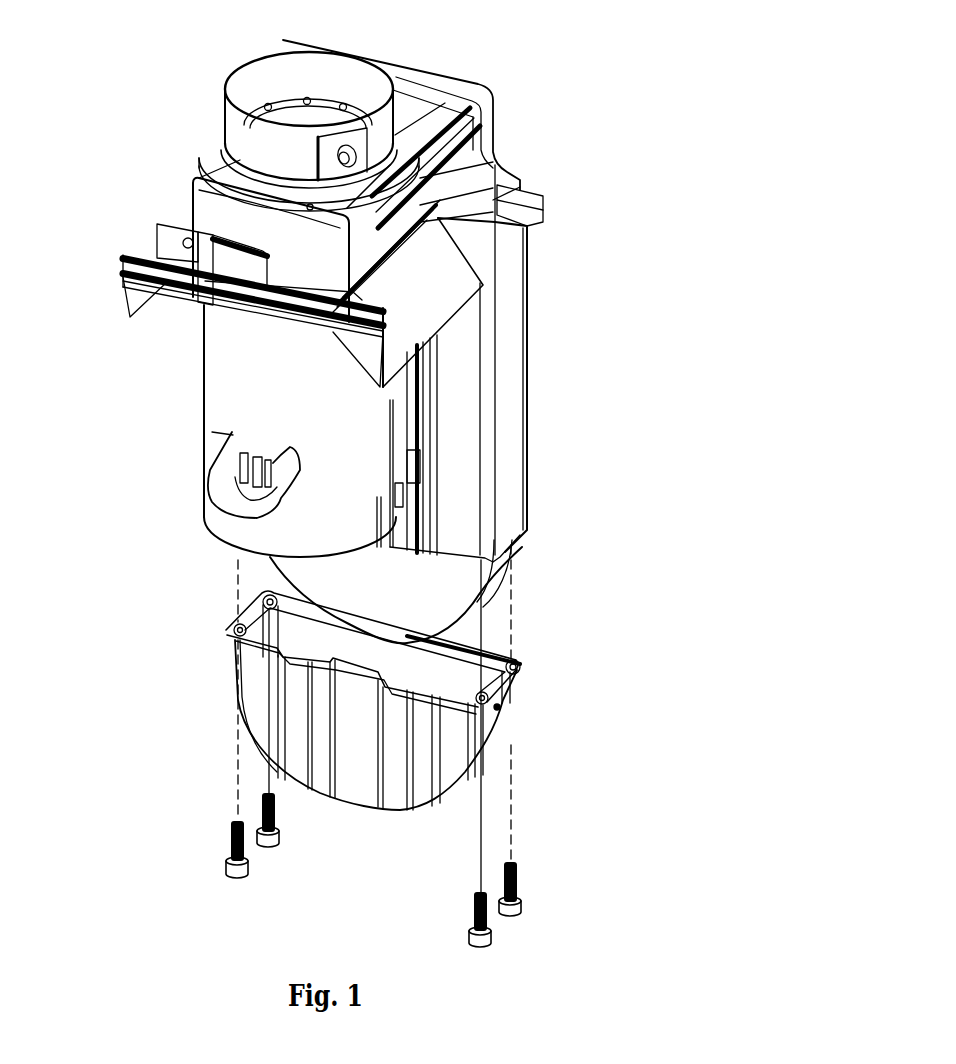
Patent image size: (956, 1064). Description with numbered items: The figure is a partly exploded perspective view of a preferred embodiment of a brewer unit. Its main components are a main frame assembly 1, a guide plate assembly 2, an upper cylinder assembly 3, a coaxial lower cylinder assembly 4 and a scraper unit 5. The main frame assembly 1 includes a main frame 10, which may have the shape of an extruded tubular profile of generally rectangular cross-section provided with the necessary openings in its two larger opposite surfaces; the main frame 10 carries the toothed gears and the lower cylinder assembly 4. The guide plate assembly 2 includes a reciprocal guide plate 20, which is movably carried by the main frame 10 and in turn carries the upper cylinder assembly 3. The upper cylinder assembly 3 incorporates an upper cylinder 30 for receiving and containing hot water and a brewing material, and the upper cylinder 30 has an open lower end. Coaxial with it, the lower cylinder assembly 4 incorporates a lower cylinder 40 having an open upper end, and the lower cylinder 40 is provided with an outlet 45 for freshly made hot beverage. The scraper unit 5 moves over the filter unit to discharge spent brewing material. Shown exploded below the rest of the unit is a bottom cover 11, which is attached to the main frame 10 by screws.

The main frame assembly 1 is at (545, 297).
The guide plate assembly 2 is at (510, 75).
The upper cylinder assembly 3 is at (207, 98).
The lower cylinder assembly 4 is at (186, 410).
The scraper unit 5 is at (143, 236).
The main frame 10 is at (507, 402).
The bottom cover 11 is at (495, 732).
The reciprocal guide plate 20 is at (423, 115).
The upper cylinder 30 is at (265, 78).
The lower cylinder 40 is at (233, 353).
The outlet 45 is at (230, 485).